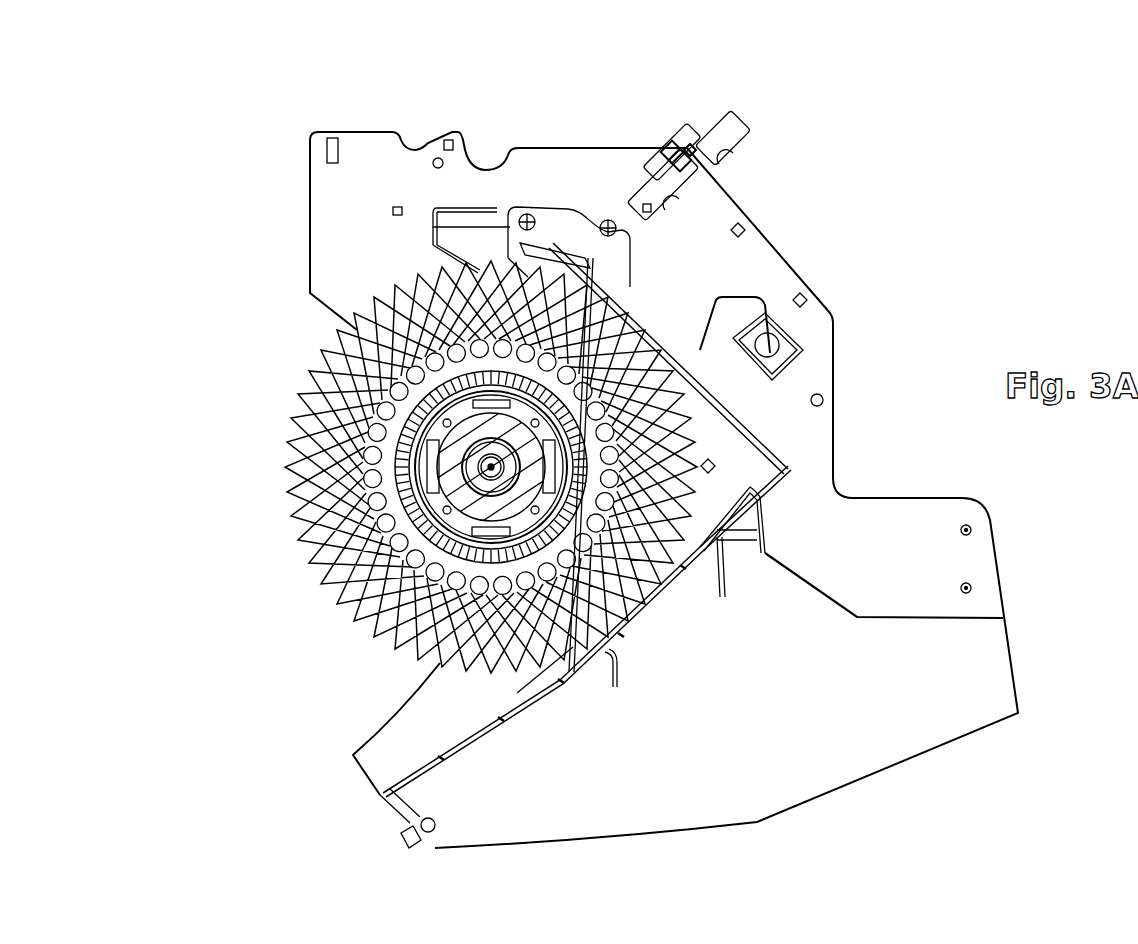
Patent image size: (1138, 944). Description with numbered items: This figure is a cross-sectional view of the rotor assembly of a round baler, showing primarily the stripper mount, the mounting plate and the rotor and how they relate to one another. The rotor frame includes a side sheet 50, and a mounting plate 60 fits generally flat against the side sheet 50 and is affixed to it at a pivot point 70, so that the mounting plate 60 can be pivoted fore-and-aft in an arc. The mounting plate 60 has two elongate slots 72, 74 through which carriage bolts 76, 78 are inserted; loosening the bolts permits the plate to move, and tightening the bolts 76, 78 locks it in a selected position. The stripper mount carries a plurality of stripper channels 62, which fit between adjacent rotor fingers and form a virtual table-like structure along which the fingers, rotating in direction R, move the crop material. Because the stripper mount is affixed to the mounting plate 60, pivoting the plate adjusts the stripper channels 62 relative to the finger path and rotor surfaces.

The side sheet 50 is at (745, 210).
The mounting plate 60 is at (580, 210).
The stripper channels 62 is at (600, 284).
The pivot point 70 is at (600, 343).
The elongate slot 72 is at (526, 212).
The elongate slot 74 is at (563, 210).
The carriage bolt 76 is at (435, 225).
The carriage bolt 78 is at (614, 229).